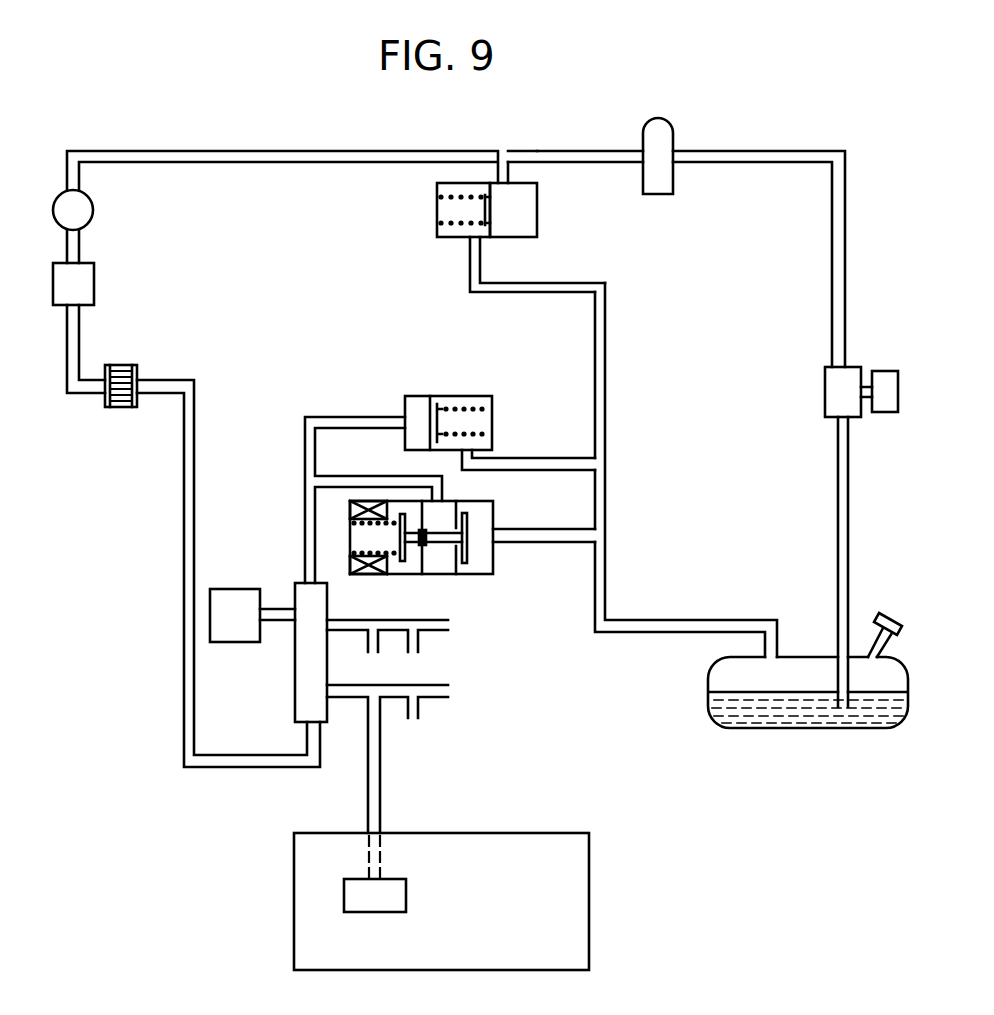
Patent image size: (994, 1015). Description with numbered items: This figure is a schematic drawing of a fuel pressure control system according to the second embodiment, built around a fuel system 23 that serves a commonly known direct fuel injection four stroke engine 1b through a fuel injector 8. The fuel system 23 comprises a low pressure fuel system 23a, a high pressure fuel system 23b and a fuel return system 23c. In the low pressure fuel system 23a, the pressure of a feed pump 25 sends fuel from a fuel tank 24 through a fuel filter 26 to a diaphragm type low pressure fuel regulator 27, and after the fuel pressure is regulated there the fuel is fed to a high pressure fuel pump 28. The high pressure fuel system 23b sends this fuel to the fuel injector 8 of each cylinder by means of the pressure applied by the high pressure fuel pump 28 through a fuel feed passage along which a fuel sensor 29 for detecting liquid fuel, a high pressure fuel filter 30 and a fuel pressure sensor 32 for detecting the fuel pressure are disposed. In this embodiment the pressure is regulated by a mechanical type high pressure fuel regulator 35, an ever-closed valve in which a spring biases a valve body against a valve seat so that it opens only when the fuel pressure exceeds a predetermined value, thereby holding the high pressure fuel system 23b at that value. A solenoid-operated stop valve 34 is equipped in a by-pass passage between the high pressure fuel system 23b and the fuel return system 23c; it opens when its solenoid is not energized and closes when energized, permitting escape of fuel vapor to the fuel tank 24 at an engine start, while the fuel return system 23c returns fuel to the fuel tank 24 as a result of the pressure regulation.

The direct fuel injection four stroke engine 1b is at (589, 893).
The fuel injector 8 is at (406, 888).
The fuel system 23 is at (727, 151).
The low pressure fuel system 23a is at (266, 151).
The high pressure fuel system 23b is at (305, 449).
The fuel return system 23c is at (605, 413).
The fuel tank 24 is at (728, 730).
The feed pump 25 is at (825, 378).
The fuel filter 26 is at (655, 196).
The low pressure fuel regulator 27 is at (437, 208).
The high pressure fuel pump 28 is at (93, 210).
The fuel sensor 29 is at (94, 283).
The high pressure fuel filter 30 is at (127, 365).
The fuel pressure sensor 32 is at (235, 588).
The solenoid-operated stop valve 34 is at (475, 574).
The mechanical type high pressure fuel regulator 35 is at (470, 396).